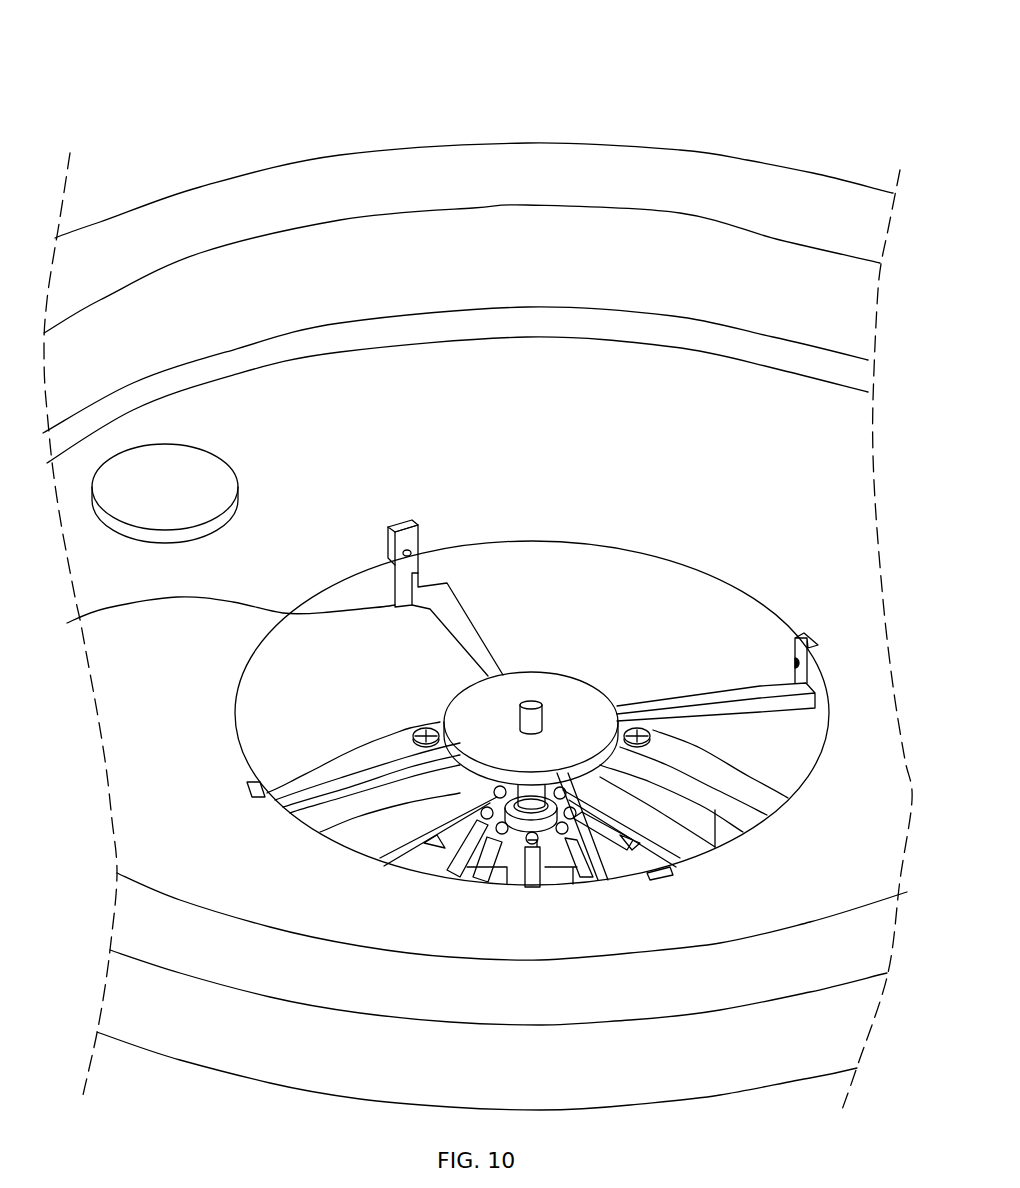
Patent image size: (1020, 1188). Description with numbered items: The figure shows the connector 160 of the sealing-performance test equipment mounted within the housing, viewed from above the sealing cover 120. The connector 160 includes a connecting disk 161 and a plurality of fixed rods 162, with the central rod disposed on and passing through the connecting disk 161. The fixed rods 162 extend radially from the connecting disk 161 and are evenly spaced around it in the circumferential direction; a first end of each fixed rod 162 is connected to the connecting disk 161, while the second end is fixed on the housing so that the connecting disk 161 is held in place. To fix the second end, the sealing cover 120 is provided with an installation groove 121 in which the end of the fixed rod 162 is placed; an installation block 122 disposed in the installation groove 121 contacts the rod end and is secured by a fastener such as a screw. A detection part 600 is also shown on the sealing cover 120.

The sealing cover 120 is at (802, 487).
The installation groove 121 is at (214, 626).
The installation block 122 is at (398, 533).
The connector 160 is at (686, 42).
The connecting disk 161 is at (562, 708).
The fixed rod 162 is at (455, 620).
The detection part 600 is at (168, 473).